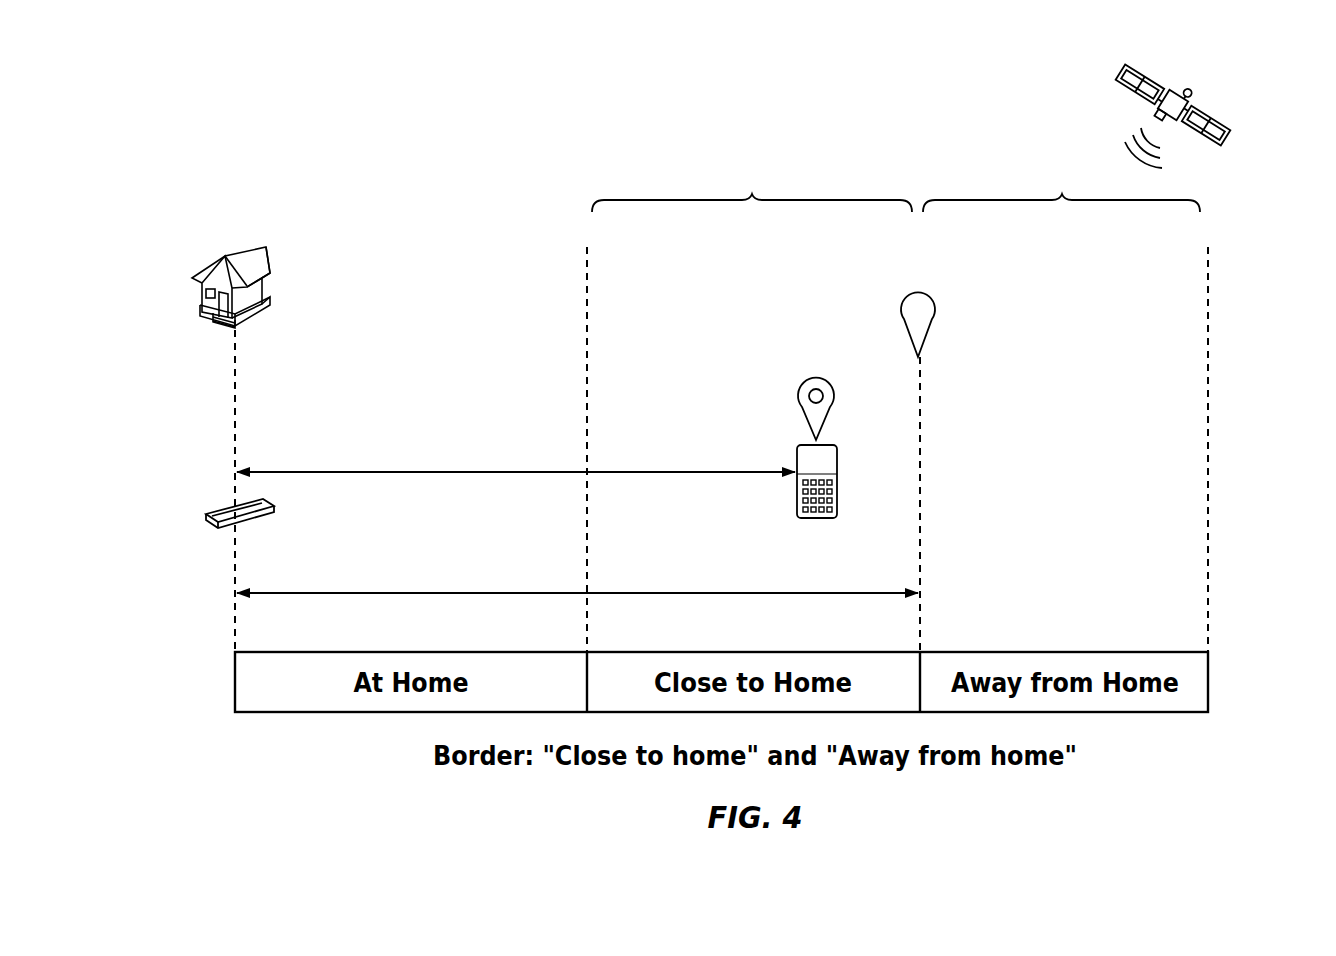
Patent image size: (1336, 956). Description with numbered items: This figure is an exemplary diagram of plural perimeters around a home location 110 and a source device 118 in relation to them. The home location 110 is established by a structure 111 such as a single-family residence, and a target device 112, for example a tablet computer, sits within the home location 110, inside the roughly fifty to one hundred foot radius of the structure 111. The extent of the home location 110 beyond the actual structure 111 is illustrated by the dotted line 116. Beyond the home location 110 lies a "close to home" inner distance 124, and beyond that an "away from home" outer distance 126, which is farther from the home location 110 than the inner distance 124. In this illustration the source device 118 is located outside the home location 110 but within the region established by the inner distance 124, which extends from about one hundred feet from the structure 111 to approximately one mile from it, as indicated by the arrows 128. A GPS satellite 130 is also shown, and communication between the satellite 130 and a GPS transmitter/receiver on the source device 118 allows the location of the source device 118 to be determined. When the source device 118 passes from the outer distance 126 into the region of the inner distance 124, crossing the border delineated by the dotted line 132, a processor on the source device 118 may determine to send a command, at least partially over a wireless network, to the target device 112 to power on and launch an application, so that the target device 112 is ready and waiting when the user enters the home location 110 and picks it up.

The home location 110 is at (272, 182).
The structure 111 is at (208, 318).
The target device 112 is at (222, 500).
The dotted line 116 is at (588, 316).
The source device 118 is at (795, 458).
The inner distance 124 is at (752, 184).
The outer distance 126 is at (1061, 184).
The arrows 128 is at (616, 591).
The GPS satellite 130 is at (1196, 100).
The dotted line 132 is at (936, 316).